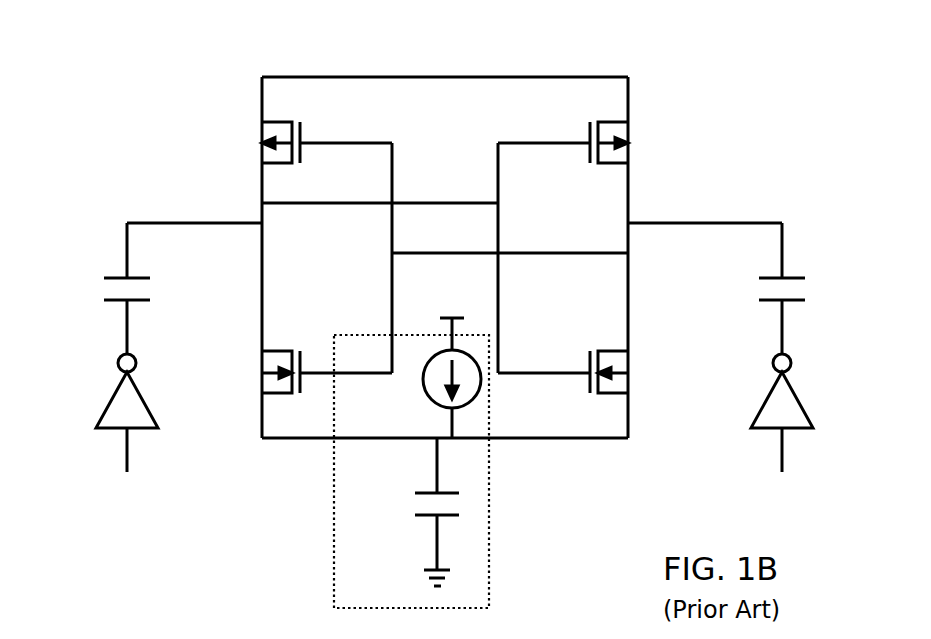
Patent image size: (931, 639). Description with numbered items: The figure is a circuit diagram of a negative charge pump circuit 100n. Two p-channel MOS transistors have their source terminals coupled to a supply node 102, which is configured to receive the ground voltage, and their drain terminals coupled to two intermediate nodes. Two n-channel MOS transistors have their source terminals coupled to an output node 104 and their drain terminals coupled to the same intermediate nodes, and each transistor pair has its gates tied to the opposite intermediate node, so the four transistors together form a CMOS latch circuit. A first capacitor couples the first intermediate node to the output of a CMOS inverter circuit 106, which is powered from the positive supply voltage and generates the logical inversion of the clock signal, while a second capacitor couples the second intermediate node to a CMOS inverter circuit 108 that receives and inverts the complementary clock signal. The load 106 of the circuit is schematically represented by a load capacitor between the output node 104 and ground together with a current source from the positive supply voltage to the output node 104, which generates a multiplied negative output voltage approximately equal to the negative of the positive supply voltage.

The negative charge pump circuit 100n is at (770, 140).
The supply node 102 is at (316, 76).
The output node 104 is at (272, 440).
The CMOS inverter circuit 106 is at (111, 398).
The CMOS inverter circuit 108 is at (800, 405).